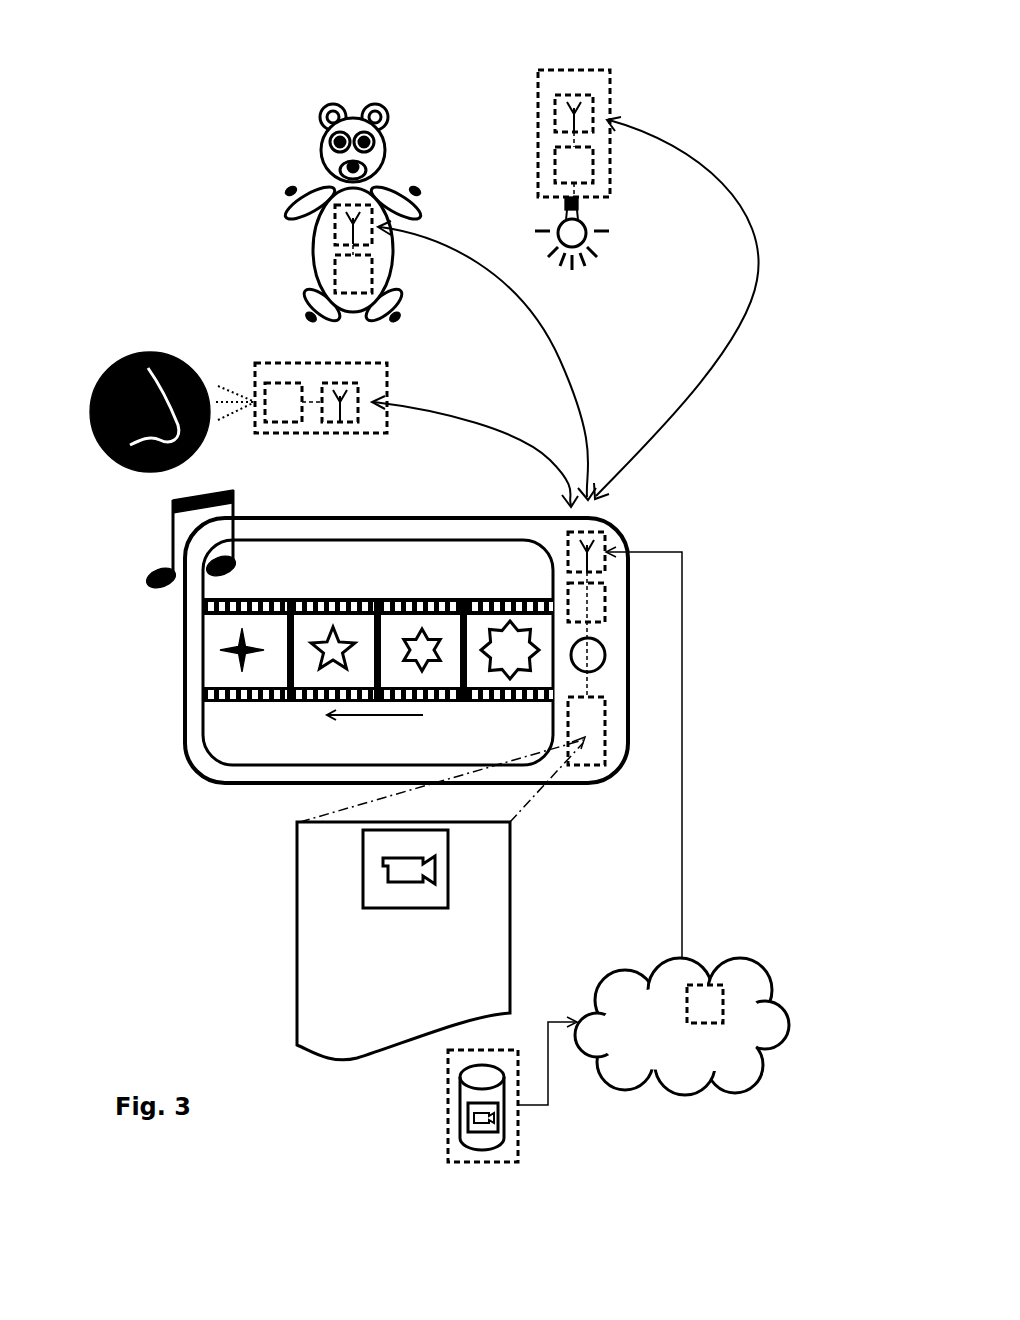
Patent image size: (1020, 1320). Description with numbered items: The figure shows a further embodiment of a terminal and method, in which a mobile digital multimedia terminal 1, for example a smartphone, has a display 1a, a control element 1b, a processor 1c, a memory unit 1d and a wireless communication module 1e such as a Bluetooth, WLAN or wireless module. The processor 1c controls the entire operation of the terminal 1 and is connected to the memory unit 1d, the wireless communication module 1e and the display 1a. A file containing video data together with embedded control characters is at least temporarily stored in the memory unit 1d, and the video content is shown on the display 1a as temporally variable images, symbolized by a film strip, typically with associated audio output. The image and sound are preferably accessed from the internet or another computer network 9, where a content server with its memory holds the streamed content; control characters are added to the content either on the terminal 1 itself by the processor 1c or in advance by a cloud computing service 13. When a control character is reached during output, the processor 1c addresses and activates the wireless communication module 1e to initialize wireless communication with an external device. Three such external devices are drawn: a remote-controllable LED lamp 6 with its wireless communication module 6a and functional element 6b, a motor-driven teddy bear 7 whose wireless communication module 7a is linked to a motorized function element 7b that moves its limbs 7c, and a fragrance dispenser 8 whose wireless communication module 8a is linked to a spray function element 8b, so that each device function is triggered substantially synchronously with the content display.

The mobile digital multimedia terminal 1 is at (223, 849).
The display 1a is at (220, 737).
The control element 1b is at (607, 656).
The processor 1c is at (606, 603).
The memory unit 1d is at (606, 730).
The wireless communication module 1e is at (612, 528).
The LED lamp 6 is at (537, 103).
The wireless communication module 6a is at (555, 112).
The functional element 6b is at (593, 165).
The children's toy 7 is at (288, 232).
The wireless communication module 7a is at (336, 225).
The function element 7b is at (372, 272).
The limbs 7c is at (397, 190).
The fragrance dispenser 8 is at (270, 363).
The wireless communication module 8a is at (340, 383).
The function element 8b is at (283, 422).
The computer network 9 is at (739, 960).
The cloud computing service 13 is at (703, 985).